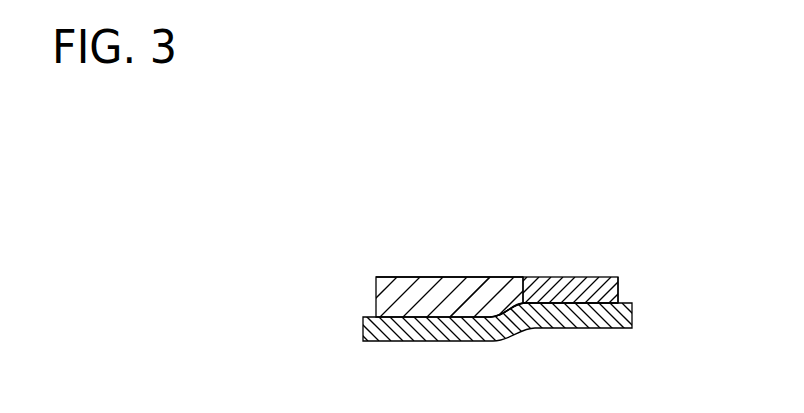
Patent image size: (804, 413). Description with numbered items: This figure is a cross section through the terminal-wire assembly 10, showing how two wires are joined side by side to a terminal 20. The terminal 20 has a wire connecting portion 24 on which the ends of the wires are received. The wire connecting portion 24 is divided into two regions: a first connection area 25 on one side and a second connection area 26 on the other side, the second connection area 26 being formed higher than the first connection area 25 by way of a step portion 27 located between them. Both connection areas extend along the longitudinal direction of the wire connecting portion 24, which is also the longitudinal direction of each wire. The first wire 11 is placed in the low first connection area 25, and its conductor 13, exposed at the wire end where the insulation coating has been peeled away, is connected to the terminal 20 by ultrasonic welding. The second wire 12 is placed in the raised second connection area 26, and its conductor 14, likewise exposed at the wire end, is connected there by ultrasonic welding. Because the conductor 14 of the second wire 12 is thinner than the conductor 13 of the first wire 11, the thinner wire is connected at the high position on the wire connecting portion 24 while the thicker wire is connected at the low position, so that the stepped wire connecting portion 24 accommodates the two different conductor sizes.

The terminal-wire assembly 10 is at (559, 160).
The first wire 11 is at (433, 277).
The second wire 12 is at (605, 277).
The conductor 13 is at (405, 277).
The conductor 14 is at (618, 290).
The terminal 20 is at (363, 327).
The wire connecting portion 24 is at (573, 209).
The first connection area 25 is at (455, 313).
The second connection area 26 is at (568, 303).
The step portion 27 is at (503, 303).